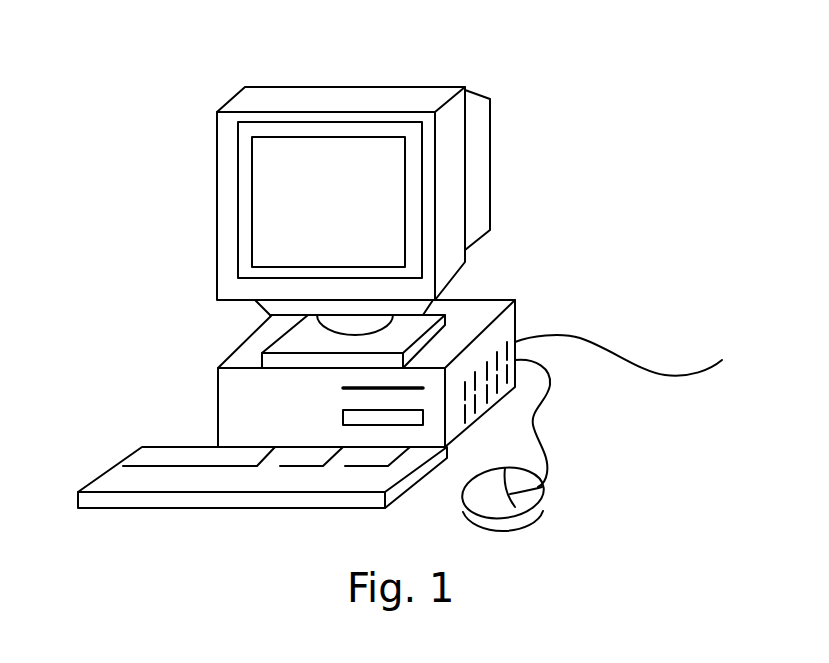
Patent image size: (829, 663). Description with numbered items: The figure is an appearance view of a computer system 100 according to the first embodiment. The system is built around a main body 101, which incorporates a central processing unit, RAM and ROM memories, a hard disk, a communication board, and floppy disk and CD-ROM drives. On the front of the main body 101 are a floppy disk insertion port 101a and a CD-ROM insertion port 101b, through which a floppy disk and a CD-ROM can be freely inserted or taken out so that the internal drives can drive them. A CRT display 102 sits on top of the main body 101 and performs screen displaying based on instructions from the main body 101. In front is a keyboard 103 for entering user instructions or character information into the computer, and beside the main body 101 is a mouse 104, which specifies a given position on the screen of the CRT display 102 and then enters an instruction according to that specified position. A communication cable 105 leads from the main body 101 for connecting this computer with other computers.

The computer system 100 is at (507, 70).
The main body 101 is at (382, 371).
The floppy disk insertion port 101a is at (343, 388).
The CD-ROM insertion port 101b is at (343, 418).
The CRT display 102 is at (492, 133).
The keyboard 103 is at (90, 485).
The mouse 104 is at (493, 495).
The communication cable 105 is at (647, 362).